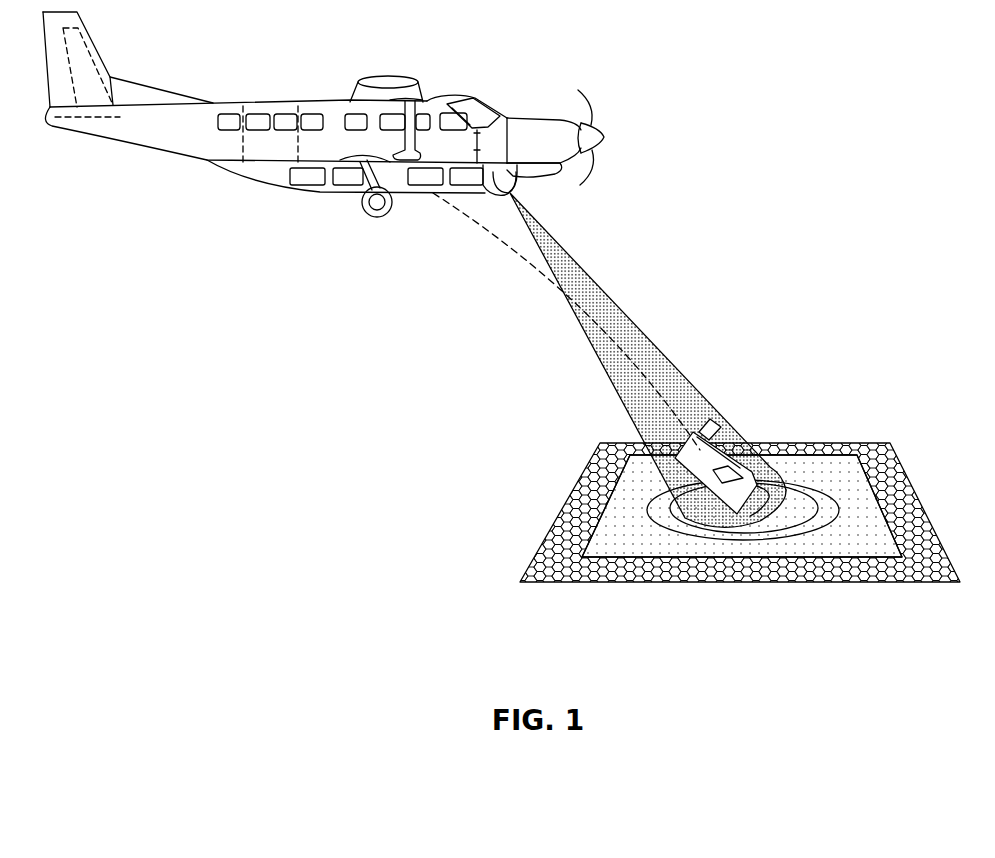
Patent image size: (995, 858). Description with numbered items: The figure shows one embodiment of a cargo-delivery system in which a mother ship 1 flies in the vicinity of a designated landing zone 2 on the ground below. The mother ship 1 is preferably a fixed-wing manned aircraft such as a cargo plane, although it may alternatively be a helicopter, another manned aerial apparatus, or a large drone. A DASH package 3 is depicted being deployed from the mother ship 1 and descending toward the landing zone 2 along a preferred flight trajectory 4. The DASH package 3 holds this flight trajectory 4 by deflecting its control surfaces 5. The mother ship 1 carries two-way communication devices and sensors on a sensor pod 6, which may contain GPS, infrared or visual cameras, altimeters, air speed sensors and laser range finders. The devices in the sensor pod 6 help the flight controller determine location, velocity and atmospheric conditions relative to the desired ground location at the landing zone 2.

The mother ship 1 is at (332, 123).
The landing zone 2 is at (745, 550).
The DASH package 3 is at (744, 466).
The flight trajectory 4 is at (484, 264).
The control surfaces 5 is at (703, 396).
The sensor pod 6 is at (538, 187).